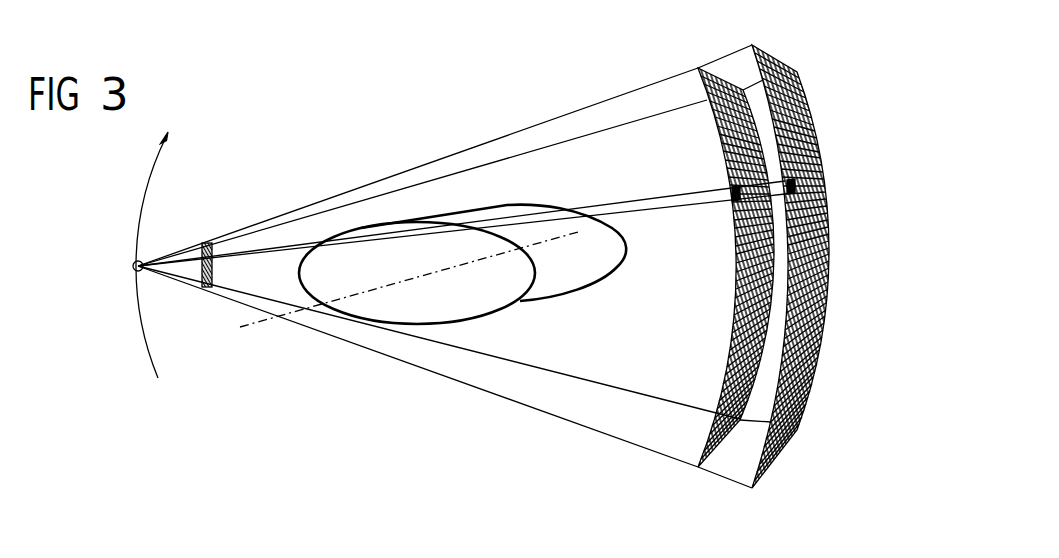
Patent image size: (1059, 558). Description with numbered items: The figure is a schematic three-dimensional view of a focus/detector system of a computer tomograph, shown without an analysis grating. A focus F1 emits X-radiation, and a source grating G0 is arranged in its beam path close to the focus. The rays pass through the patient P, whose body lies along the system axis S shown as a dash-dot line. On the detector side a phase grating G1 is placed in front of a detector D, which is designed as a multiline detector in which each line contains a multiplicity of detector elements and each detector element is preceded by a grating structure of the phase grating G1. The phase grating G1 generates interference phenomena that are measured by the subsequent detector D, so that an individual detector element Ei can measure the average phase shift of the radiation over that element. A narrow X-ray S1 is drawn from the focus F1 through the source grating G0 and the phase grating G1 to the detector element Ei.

The focus F1 is at (131, 263).
The source grating G0 is at (209, 242).
The phase grating G1 is at (713, 70).
The detector D is at (807, 100).
The detector element Ei is at (795, 185).
The X-ray S1 is at (648, 206).
The system axis S is at (264, 319).
The patient P is at (408, 327).